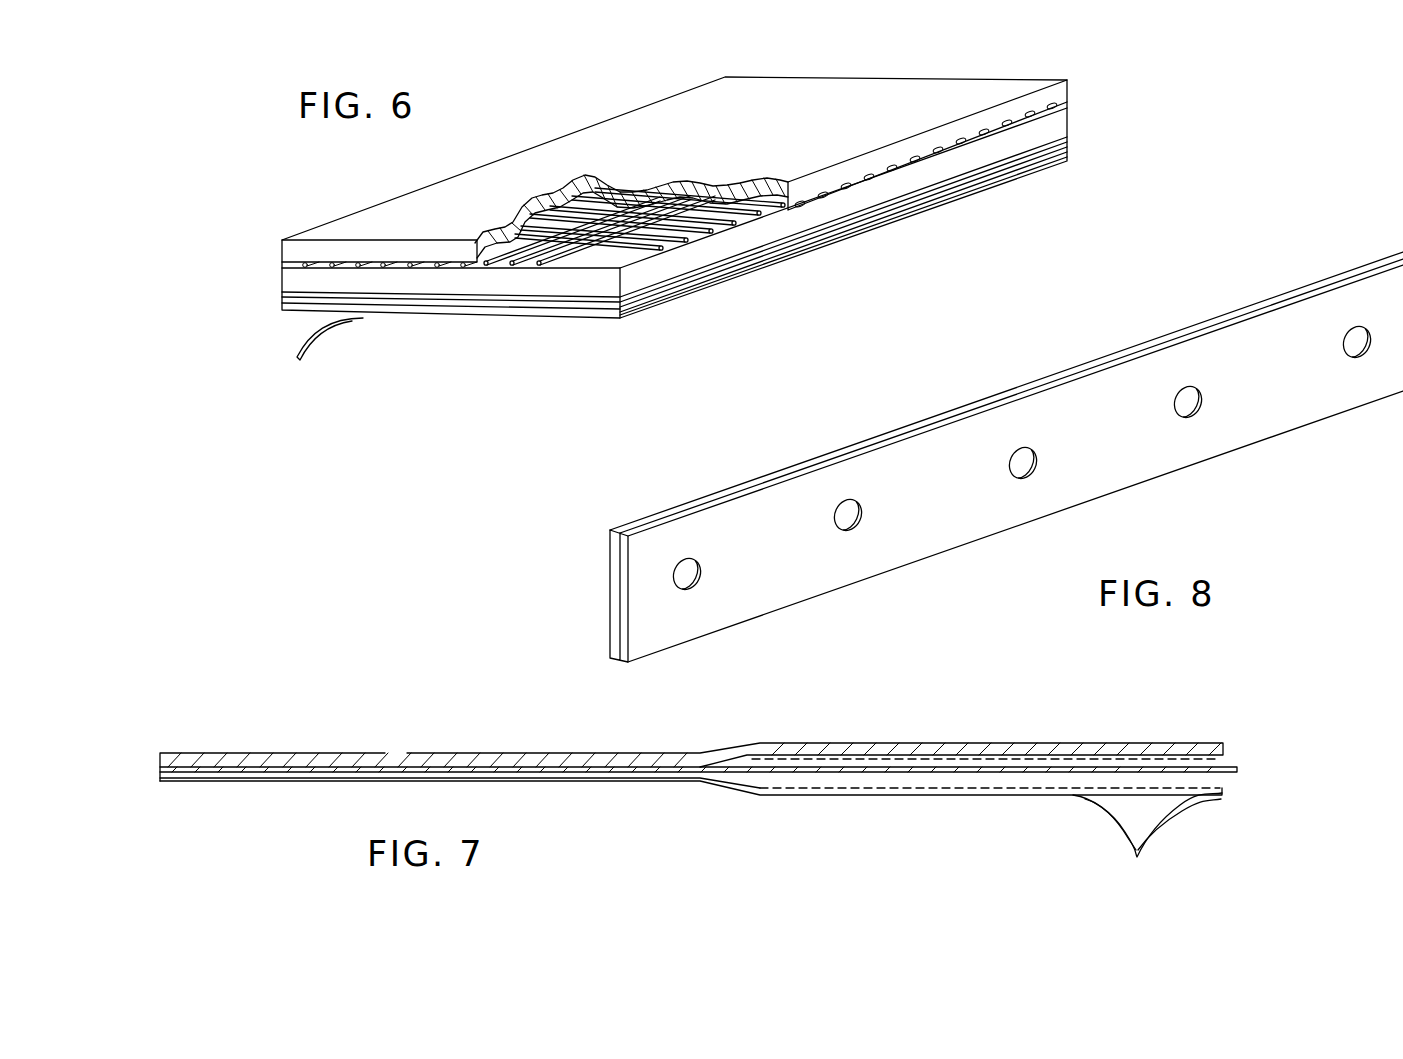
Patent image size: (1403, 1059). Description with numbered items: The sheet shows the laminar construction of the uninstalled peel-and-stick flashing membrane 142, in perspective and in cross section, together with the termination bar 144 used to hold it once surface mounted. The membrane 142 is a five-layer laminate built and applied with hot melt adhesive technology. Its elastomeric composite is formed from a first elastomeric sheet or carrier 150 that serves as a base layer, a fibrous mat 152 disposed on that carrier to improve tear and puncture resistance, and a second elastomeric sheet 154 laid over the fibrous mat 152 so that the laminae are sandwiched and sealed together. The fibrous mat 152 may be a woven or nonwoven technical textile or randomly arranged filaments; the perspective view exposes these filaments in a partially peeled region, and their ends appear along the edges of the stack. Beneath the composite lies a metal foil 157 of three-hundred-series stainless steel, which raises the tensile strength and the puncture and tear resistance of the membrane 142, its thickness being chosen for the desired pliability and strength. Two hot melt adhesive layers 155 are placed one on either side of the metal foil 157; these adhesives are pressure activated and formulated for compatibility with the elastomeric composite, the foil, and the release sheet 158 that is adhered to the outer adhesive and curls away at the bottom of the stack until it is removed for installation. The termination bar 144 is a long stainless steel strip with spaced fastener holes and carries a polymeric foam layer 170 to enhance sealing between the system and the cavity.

In FIG. 6, the peel-and-stick flashing membrane 142 is at (522, 140).
In FIG. 8, the termination bar 144 is at (933, 390).
In FIG. 6, the first elastomeric sheet 150 is at (1057, 120).
In FIG. 7, the first elastomeric sheet 150 is at (691, 786).
In FIG. 6, the fibrous mat 152 is at (555, 263).
In FIG. 7, the fibrous mat 152 is at (694, 755).
In FIG. 6, the second elastomeric sheet 154 is at (295, 248).
In FIG. 7, the second elastomeric sheet 154 is at (443, 760).
In FIG. 6, the hot melt adhesive layer 155 is at (1073, 131).
In FIG. 7, the hot melt adhesive layer 155 is at (1190, 763).
In FIG. 6, the metal foil 157 is at (1073, 141).
In FIG. 7, the metal foil 157 is at (1230, 776).
In FIG. 6, the release sheet 158 is at (575, 318).
In FIG. 7, the release sheet 158 is at (1142, 823).
In FIG. 8, the polymeric foam layer 170 is at (606, 586).